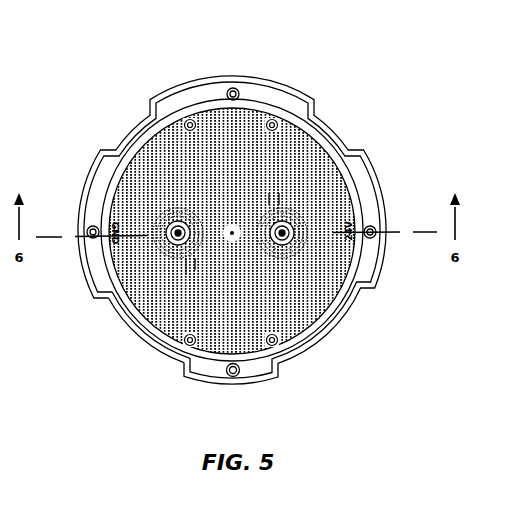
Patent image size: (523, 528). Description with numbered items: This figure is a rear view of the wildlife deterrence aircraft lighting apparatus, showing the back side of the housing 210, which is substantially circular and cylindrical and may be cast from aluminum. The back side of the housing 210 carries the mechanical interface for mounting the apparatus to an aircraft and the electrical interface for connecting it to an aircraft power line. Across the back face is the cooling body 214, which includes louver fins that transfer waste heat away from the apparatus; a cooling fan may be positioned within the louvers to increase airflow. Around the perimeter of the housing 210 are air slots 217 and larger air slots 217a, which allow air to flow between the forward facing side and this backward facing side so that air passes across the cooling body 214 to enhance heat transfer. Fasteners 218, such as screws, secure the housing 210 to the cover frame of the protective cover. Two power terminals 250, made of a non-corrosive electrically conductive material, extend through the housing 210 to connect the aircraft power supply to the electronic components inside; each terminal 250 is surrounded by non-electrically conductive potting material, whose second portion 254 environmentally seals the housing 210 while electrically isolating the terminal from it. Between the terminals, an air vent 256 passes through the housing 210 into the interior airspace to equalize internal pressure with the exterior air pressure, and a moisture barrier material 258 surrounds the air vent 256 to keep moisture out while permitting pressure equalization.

The housing 210 is at (225, 193).
The cooling body 214 is at (222, 183).
The air slots 217 is at (112, 133).
The larger air slots 217a is at (124, 339).
The fasteners 218 is at (226, 371).
The power terminals 250 is at (173, 247).
The second portion of non-electrically conductive material 254 is at (172, 237).
The air vent 256 is at (230, 232).
The moisture barrier material 258 is at (230, 238).